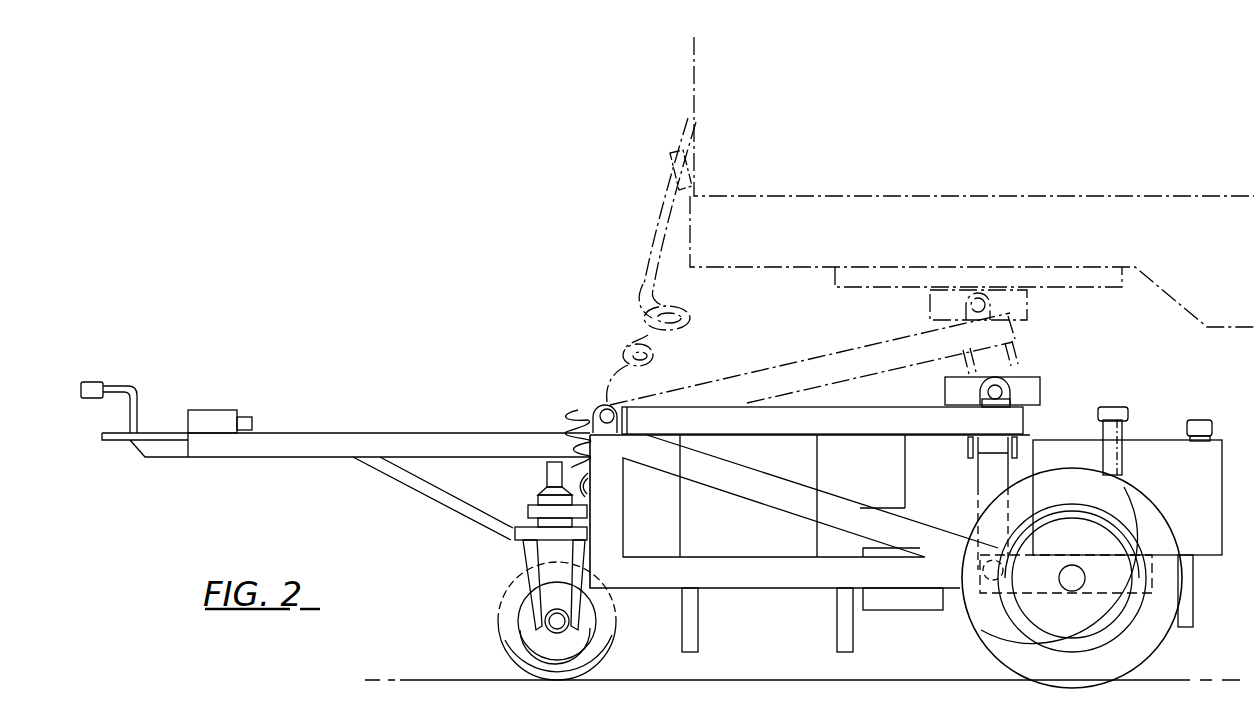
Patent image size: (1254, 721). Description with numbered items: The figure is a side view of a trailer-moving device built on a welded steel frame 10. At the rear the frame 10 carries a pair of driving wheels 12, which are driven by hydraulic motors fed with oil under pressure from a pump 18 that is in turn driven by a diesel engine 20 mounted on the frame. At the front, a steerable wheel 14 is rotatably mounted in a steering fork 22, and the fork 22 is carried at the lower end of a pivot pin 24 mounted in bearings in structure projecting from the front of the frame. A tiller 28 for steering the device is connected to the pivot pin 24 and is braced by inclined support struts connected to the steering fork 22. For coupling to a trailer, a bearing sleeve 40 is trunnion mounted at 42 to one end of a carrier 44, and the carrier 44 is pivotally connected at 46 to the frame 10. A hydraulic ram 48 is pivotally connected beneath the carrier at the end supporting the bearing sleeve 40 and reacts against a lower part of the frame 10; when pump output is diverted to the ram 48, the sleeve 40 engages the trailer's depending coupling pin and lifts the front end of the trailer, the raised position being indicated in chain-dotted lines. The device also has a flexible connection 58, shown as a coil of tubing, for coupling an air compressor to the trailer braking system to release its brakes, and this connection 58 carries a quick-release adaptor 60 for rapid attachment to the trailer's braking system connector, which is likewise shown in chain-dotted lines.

The welded steel frame 10 is at (782, 577).
The driving wheels 12 is at (1005, 643).
The steerable wheel 14 is at (503, 635).
The pump 18 is at (912, 600).
The diesel engine 20 is at (1160, 450).
The steering fork 22 is at (548, 580).
The pivot pin 24 is at (552, 472).
The tiller 28 is at (354, 446).
The bearing sleeve 40 is at (1027, 385).
The trunnion mounting 42 is at (995, 388).
The carrier 44 is at (910, 417).
The pivotal connection 46 is at (602, 408).
The hydraulic ram 48 is at (985, 487).
The flexible connection 58 is at (568, 425).
The quick-release adaptor 60 is at (580, 491).